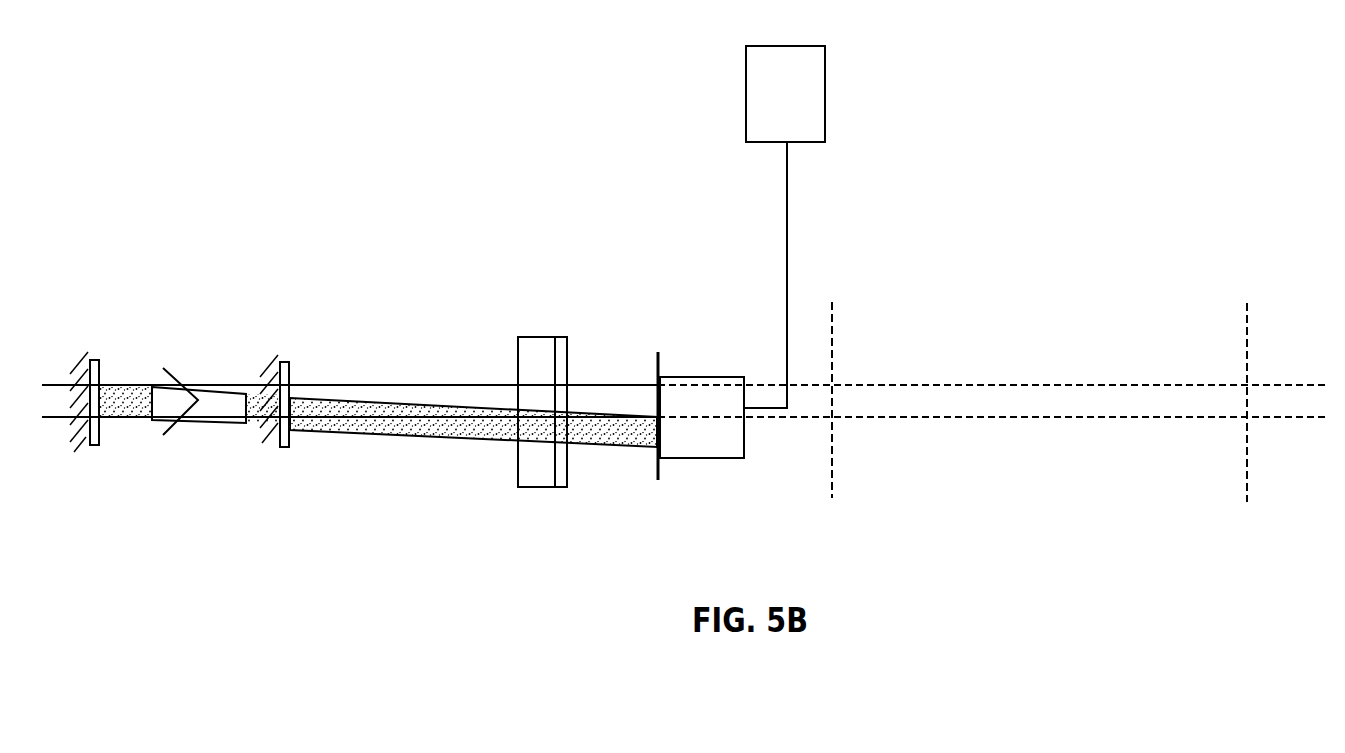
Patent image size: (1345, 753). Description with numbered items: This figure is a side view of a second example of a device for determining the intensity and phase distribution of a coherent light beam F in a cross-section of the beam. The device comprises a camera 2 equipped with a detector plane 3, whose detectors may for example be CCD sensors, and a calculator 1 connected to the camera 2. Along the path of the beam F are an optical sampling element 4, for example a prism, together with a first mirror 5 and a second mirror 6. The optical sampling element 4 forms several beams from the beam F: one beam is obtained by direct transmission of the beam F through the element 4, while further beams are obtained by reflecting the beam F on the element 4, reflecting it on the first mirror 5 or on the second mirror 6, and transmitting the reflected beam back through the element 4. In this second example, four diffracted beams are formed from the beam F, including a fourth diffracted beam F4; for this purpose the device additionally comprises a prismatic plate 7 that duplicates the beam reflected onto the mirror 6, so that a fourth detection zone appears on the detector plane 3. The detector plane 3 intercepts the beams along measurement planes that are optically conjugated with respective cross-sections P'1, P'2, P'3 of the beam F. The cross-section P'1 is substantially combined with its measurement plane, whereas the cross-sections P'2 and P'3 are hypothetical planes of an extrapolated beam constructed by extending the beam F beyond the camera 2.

The calculator 1 is at (827, 93).
The camera 2 is at (700, 458).
The detector plane 3 is at (660, 358).
The optical sampling element 4 is at (547, 478).
The first mirror 5 is at (285, 361).
The second mirror 6 is at (90, 360).
The prismatic plate 7 is at (93, 447).
The coherent light beam F is at (220, 408).
The fourth diffracted beam F4 is at (597, 433).
The first cross-section P'1 is at (622, 463).
The second cross-section P'2 is at (873, 404).
The third cross-section P'3 is at (1289, 404).